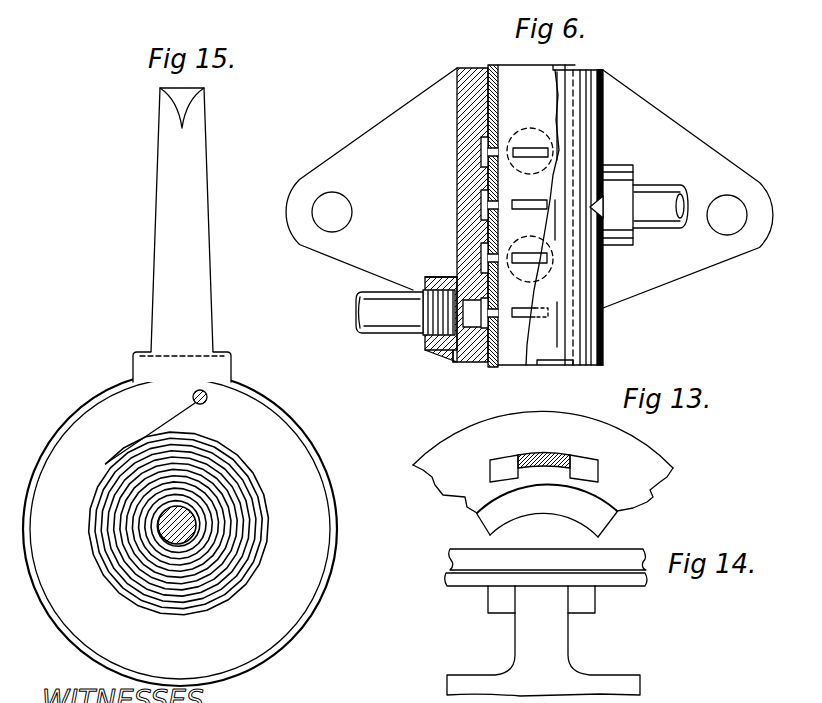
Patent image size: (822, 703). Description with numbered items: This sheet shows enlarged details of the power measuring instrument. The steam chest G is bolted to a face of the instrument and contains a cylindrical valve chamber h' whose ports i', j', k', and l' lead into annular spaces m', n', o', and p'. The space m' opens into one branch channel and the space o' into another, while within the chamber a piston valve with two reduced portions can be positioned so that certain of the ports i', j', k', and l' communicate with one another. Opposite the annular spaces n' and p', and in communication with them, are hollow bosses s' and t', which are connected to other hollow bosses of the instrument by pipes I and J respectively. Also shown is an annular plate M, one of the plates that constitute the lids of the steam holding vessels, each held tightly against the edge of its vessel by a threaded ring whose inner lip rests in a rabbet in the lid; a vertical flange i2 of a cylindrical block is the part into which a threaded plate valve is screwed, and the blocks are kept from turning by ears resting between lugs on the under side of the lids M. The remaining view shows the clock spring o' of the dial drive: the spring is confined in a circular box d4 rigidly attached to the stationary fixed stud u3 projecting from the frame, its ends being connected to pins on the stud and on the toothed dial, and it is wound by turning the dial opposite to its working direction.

In FIG. 15, the circular box d4 is at (192, 529).
In FIG. 15, the annular space o' is at (191, 523).
In FIG. 6, the annular space o' is at (459, 258).
In FIG. 15, the fixed stud u3 is at (162, 528).
In FIG. 6, the steam chest G is at (529, 188).
In FIG. 6, the annular space p' is at (472, 229).
In FIG. 6, the hollow boss t' is at (448, 332).
In FIG. 6, the pipe J is at (357, 320).
In FIG. 6, the annular space m' is at (460, 150).
In FIG. 6, the annular space n' is at (460, 205).
In FIG. 6, the port k' is at (526, 255).
In FIG. 6, the port i' is at (526, 144).
In FIG. 6, the port j' is at (523, 194).
In FIG. 6, the port l' is at (524, 302).
In FIG. 6, the cylindrical valve chamber h' is at (550, 202).
In FIG. 6, the hollow boss s' is at (613, 194).
In FIG. 6, the pipe I is at (660, 193).
In FIG. 13, the annular plate M is at (543, 474).
In FIG. 14, the annular plate M is at (532, 567).
In FIG. 14, the vertical flange i2 is at (543, 641).